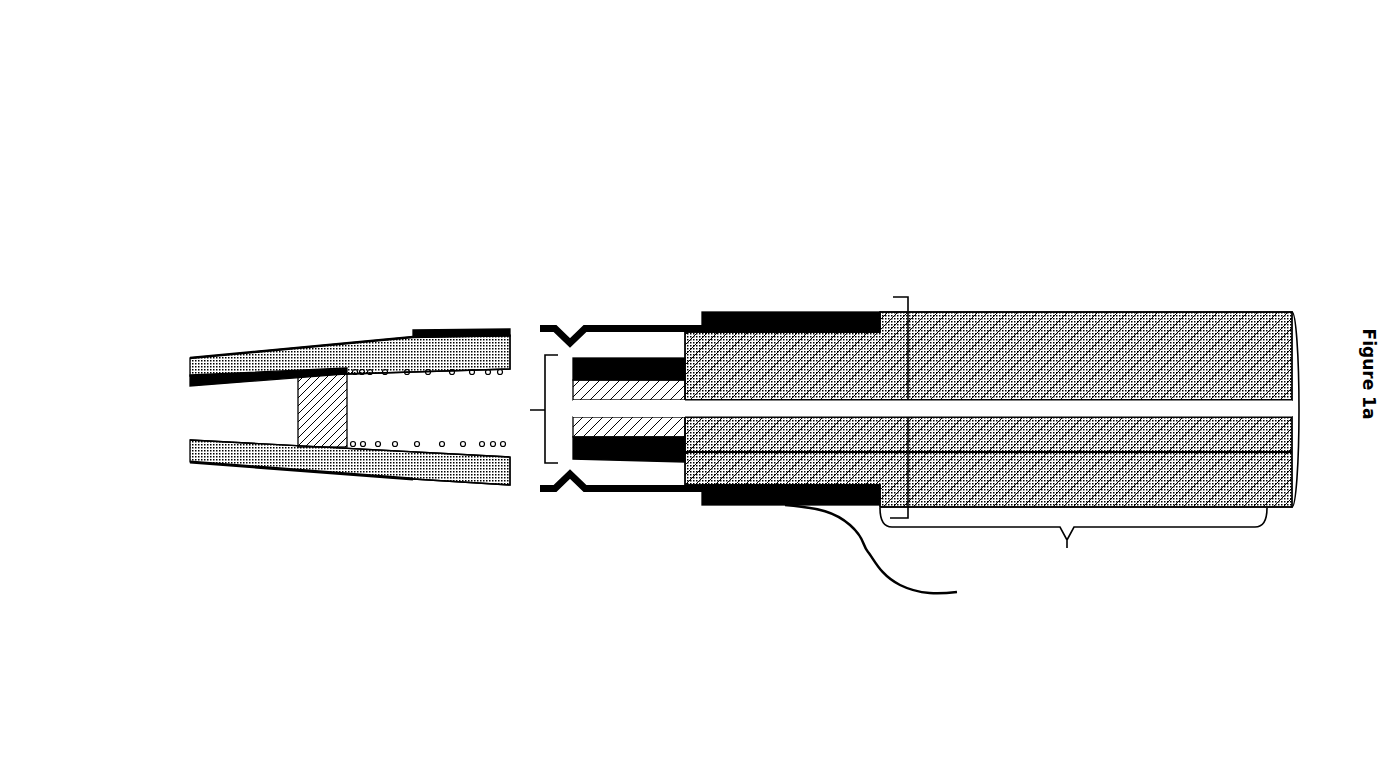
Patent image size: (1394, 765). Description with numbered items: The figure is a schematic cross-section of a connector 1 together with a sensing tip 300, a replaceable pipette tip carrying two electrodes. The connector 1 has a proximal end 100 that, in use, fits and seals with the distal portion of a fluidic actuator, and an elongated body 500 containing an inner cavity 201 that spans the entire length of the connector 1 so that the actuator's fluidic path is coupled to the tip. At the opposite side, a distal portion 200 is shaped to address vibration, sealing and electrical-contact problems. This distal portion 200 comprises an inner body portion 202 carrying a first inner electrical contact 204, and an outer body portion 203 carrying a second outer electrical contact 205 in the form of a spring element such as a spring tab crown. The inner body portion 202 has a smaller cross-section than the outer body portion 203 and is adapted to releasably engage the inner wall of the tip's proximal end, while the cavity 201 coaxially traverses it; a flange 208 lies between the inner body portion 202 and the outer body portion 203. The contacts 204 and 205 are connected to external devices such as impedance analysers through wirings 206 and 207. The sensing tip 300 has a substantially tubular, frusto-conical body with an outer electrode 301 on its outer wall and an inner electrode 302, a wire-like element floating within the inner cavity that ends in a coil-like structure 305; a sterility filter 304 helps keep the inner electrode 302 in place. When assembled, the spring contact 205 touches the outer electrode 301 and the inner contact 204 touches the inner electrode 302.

The connector 1 is at (729, 373).
The proximal end 100 is at (936, 443).
The distal portion 200 is at (749, 412).
The inner cavity 201 is at (1097, 406).
The inner body portion 202 is at (530, 410).
The outer body portion 203 is at (934, 407).
The first inner electrical contact 204 is at (614, 366).
The second outer electrical contact 205 is at (686, 328).
The wiring 206 is at (907, 594).
The wiring 207 is at (959, 455).
The flange 208 is at (630, 458).
The sensing tip 300 is at (334, 374).
The outer electrode 301 is at (405, 335).
The inner electrode 302 is at (221, 375).
The sterility filter 304 is at (307, 434).
The coil-like structure 305 is at (394, 454).
The elongated body 500 is at (1073, 543).